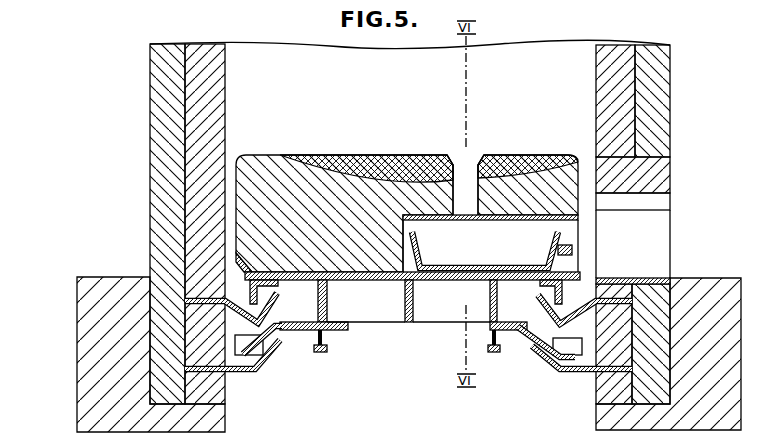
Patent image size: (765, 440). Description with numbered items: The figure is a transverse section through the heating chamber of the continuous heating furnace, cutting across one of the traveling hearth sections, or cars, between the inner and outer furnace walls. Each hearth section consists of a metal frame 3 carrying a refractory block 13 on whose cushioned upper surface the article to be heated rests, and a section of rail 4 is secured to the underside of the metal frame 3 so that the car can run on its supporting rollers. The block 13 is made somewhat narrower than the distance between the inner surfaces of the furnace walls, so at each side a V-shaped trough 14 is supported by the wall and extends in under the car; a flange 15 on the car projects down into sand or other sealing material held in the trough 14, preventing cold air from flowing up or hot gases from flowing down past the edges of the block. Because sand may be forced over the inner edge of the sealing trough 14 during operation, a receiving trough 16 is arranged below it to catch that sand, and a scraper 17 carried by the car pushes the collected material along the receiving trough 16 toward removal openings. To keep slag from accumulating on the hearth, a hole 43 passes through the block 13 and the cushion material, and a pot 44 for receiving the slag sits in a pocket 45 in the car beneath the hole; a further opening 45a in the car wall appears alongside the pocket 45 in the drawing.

The metal frame 3 is at (406, 328).
The rail section 4 is at (320, 352).
The refractory block 13 is at (272, 190).
The V-shaped sealing trough 14 is at (278, 303).
The flange 15 is at (246, 288).
The receiving trough 16 is at (242, 373).
The scraper 17 is at (273, 348).
The hole 43 is at (466, 188).
The slag pot 44 is at (492, 250).
The pocket 45 is at (562, 239).
The opening 45a is at (655, 252).